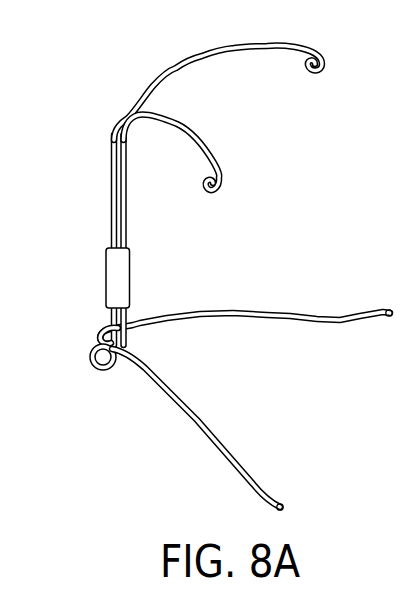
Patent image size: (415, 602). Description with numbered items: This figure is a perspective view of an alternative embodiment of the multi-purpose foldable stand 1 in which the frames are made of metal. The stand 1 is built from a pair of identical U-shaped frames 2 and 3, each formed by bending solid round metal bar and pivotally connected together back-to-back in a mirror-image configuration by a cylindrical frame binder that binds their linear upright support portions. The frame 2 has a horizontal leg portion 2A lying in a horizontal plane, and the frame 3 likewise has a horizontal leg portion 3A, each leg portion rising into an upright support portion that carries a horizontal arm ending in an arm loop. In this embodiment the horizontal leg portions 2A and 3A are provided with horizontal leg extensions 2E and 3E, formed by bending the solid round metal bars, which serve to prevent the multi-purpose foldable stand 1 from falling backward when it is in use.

The multi-purpose foldable stand 1 is at (129, 63).
The frame 2 is at (226, 413).
The horizontal leg portion 2A is at (230, 458).
The horizontal leg extension 2E is at (99, 368).
The frame 3 is at (297, 339).
The horizontal leg portion 3A is at (310, 310).
The horizontal leg extension 3E is at (100, 328).